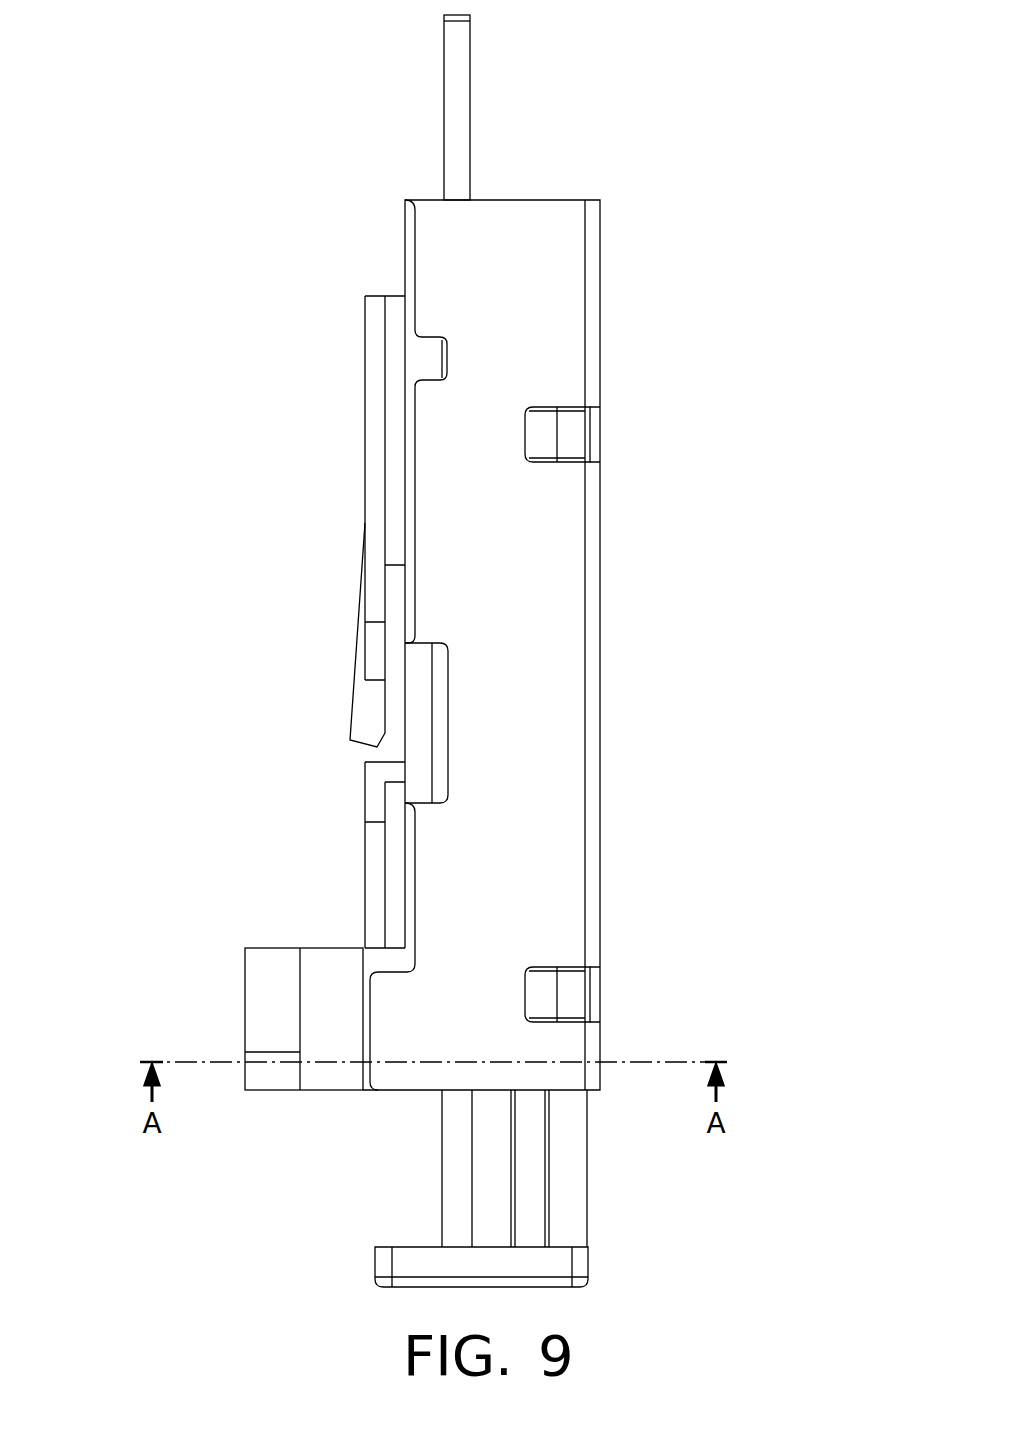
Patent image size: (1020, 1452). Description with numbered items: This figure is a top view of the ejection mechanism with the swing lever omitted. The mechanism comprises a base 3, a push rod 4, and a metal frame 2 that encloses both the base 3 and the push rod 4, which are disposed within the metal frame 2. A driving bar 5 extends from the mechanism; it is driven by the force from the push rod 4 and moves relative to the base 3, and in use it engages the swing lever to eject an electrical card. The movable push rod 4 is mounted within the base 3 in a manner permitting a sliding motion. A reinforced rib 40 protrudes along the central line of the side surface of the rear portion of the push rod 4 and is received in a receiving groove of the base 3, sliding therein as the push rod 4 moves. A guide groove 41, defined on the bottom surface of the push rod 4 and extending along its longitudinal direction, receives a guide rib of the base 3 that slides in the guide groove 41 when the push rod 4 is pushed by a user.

The metal frame 2 is at (553, 283).
The base 3 is at (260, 975).
The push rod 4 is at (519, 1188).
The reinforced rib 40 is at (455, 1188).
The guide groove 41 is at (530, 1153).
The driving bar 5 is at (460, 93).